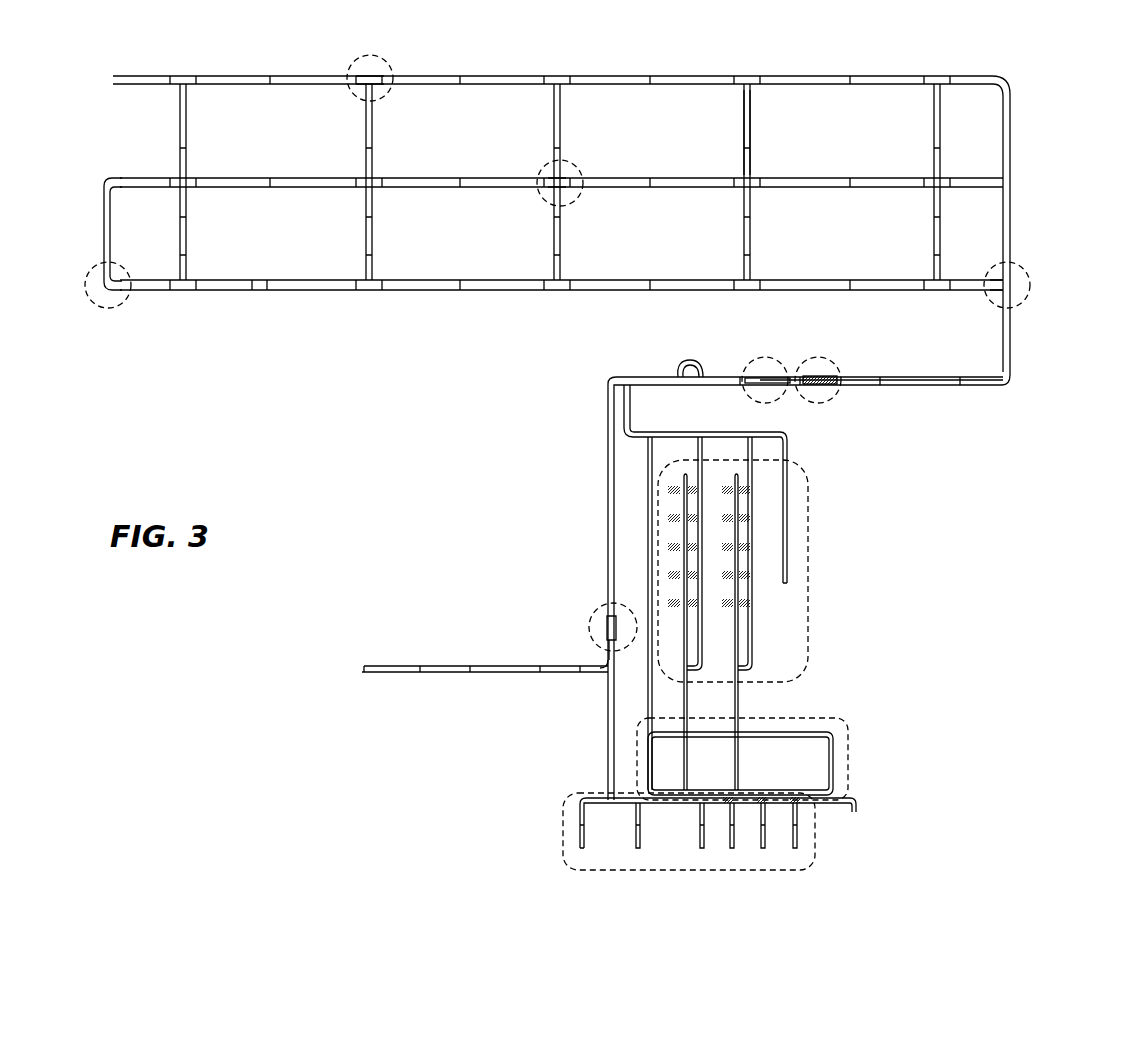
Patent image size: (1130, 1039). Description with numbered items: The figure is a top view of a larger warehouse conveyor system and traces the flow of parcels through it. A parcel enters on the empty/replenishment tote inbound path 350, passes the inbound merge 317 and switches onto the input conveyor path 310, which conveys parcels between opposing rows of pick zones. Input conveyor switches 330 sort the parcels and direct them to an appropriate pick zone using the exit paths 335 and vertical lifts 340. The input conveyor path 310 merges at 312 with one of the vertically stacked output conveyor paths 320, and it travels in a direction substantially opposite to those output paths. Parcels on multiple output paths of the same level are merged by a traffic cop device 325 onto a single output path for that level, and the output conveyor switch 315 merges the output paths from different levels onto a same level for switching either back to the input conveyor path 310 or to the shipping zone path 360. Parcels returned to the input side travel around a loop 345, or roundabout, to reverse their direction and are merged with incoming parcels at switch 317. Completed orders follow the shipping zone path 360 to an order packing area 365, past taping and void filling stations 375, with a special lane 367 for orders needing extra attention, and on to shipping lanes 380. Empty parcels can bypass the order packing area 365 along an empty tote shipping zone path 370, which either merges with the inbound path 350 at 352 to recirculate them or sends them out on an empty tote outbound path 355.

The input conveyor path 310 is at (820, 190).
The merge 312 is at (130, 298).
The output conveyor switch 315 is at (836, 400).
The inbound merge 317 is at (770, 357).
The output conveyor paths 320 is at (665, 82).
The traffic cop device 325 is at (1030, 275).
The input conveyor switches 330 is at (580, 200).
The exit paths 335 is at (752, 128).
The vertical lifts 340 is at (388, 97).
The loop 345 is at (688, 360).
The empty/replenishment tote inbound path 350 is at (612, 378).
The merge point 352 is at (596, 610).
The empty tote outbound path 355 is at (380, 673).
The shipping zone path 360 is at (625, 410).
The order packing area 365 is at (812, 600).
The special lane 367 is at (788, 515).
The empty tote shipping zone path 370 is at (648, 512).
The taping and void filling stations 375 is at (850, 725).
The shipping lanes 380 is at (660, 870).